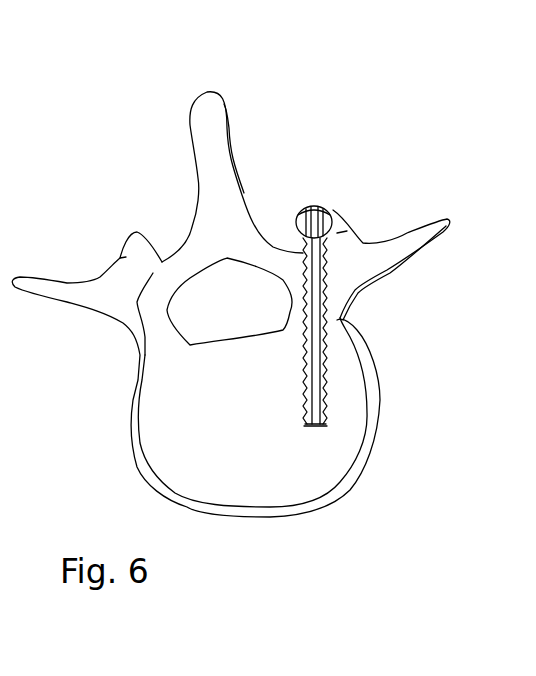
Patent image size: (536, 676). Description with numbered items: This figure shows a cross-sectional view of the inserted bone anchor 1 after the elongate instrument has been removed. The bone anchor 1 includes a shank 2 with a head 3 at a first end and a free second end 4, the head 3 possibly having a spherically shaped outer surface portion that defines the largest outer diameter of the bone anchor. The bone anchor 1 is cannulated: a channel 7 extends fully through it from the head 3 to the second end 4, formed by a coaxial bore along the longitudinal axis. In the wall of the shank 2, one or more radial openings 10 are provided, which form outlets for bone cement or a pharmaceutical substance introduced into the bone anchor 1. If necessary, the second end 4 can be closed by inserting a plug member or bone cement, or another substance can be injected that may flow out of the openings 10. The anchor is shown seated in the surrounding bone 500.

The bone anchor 1 is at (325, 322).
The shank 2 is at (325, 347).
The head 3 is at (330, 227).
The second end 4 is at (315, 426).
The channel 7 is at (315, 283).
The radial openings 10 is at (325, 393).
The vertebra 500 is at (370, 443).